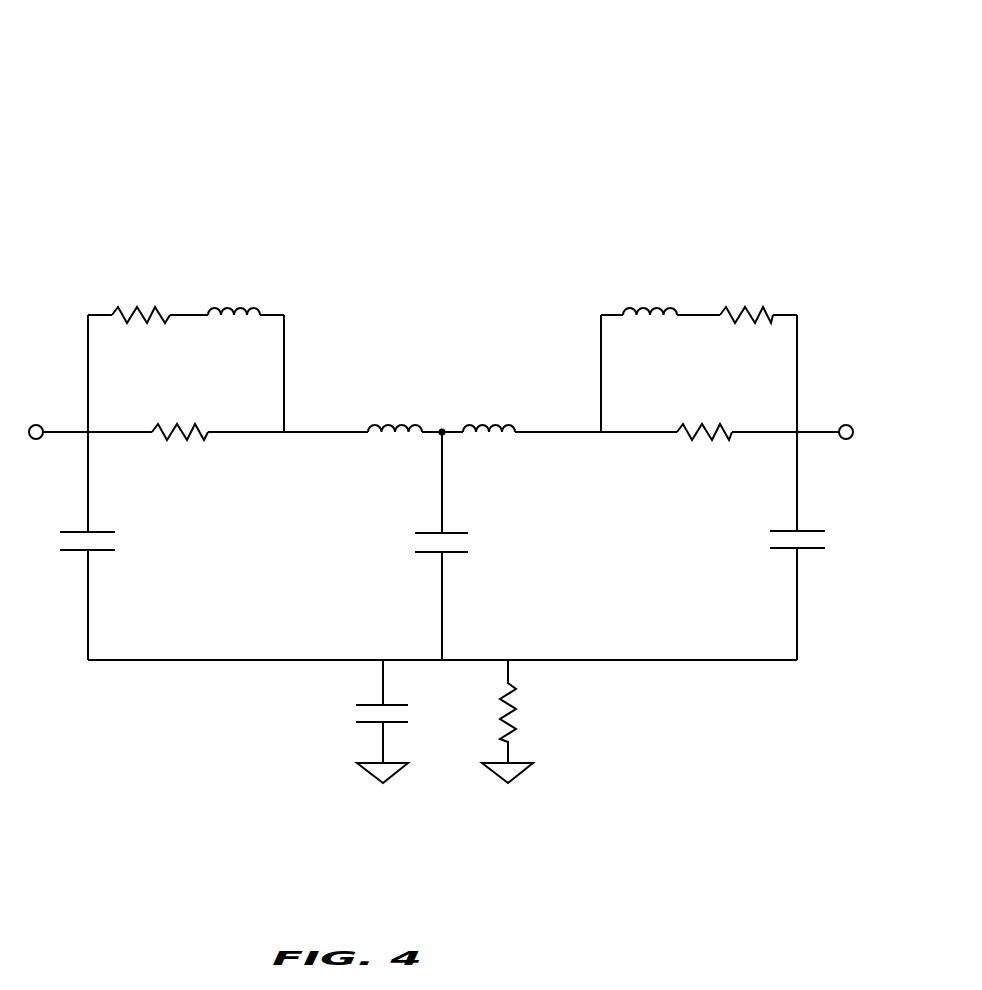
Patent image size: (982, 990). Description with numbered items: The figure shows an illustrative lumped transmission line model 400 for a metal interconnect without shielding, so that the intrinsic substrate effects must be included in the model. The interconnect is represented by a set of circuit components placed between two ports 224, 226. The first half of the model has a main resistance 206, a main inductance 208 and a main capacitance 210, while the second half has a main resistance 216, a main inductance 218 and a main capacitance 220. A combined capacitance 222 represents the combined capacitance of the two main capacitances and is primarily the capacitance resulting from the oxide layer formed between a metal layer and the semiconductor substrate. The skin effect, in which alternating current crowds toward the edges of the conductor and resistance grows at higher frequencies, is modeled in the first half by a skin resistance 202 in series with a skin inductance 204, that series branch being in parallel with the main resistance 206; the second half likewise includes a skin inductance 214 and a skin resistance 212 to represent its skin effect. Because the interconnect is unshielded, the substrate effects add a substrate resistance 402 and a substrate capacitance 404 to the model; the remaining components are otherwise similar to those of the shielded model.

The lumped transmission line model without shielding 400 is at (118, 122).
The skin resistance 202 is at (140, 286).
The skin inductance 204 is at (233, 282).
The main resistance 206 is at (180, 403).
The main inductance 208 is at (392, 399).
The main capacitance 210 is at (116, 553).
The skin resistance 212 is at (747, 286).
The skin inductance 214 is at (650, 282).
The main resistance 216 is at (704, 403).
The main inductance 218 is at (488, 399).
The main capacitance 220 is at (770, 547).
The combined capacitance 222 is at (470, 551).
The port 224 is at (36, 425).
The port 226 is at (846, 425).
The substrate resistance 402 is at (349, 721).
The substrate capacitance 404 is at (532, 721).